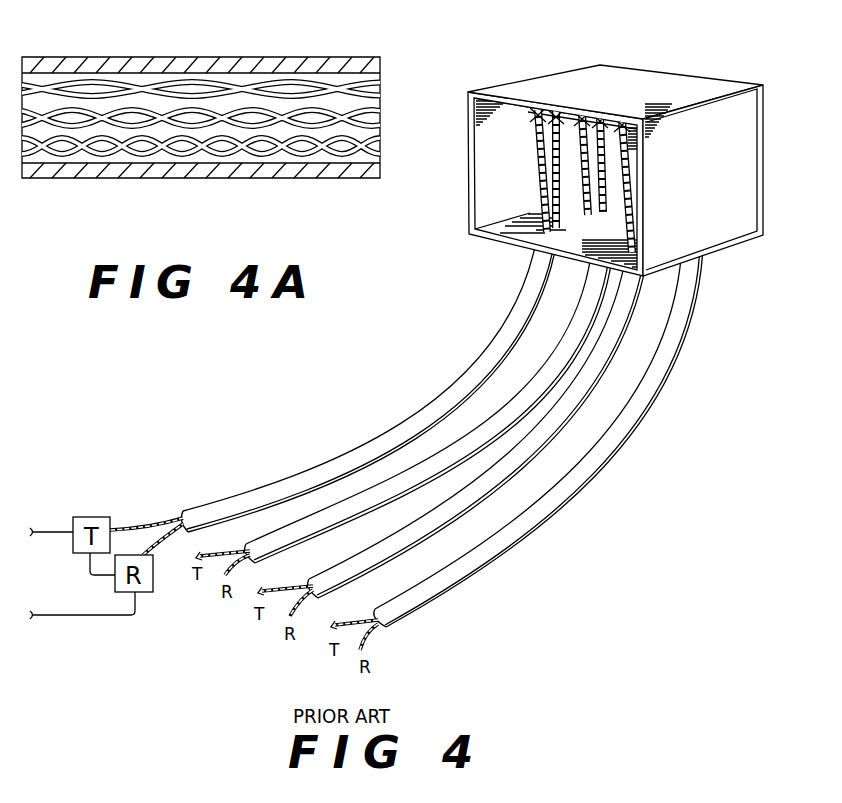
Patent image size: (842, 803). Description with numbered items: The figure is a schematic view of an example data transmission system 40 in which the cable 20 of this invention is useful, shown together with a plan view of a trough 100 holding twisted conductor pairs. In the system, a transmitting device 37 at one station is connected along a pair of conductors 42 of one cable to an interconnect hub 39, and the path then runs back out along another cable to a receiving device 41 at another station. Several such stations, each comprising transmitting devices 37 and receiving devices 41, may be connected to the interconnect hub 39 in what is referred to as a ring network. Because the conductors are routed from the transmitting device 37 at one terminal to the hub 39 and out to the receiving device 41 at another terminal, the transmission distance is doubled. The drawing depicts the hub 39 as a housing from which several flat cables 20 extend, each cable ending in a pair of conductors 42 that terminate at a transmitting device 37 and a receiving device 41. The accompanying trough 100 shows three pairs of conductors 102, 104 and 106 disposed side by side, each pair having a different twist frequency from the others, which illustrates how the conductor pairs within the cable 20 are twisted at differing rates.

In FIG. 4, the cable 20 is at (338, 459).
In FIG. 4, the transmitting device 37 is at (73, 534).
In FIG. 4, the interconnect hub 39 is at (678, 79).
In FIG. 4, the system 40 is at (615, 149).
In FIG. 4, the receiving device 41 is at (117, 587).
In FIG. 4, the conductors 42 is at (157, 533).
In FIG. 4A, the trough 100 is at (187, 66).
In FIG. 4A, the pair of conductors 102 is at (367, 92).
In FIG. 4A, the pair of conductors 104 is at (370, 120).
In FIG. 4A, the pair of conductors 106 is at (370, 150).